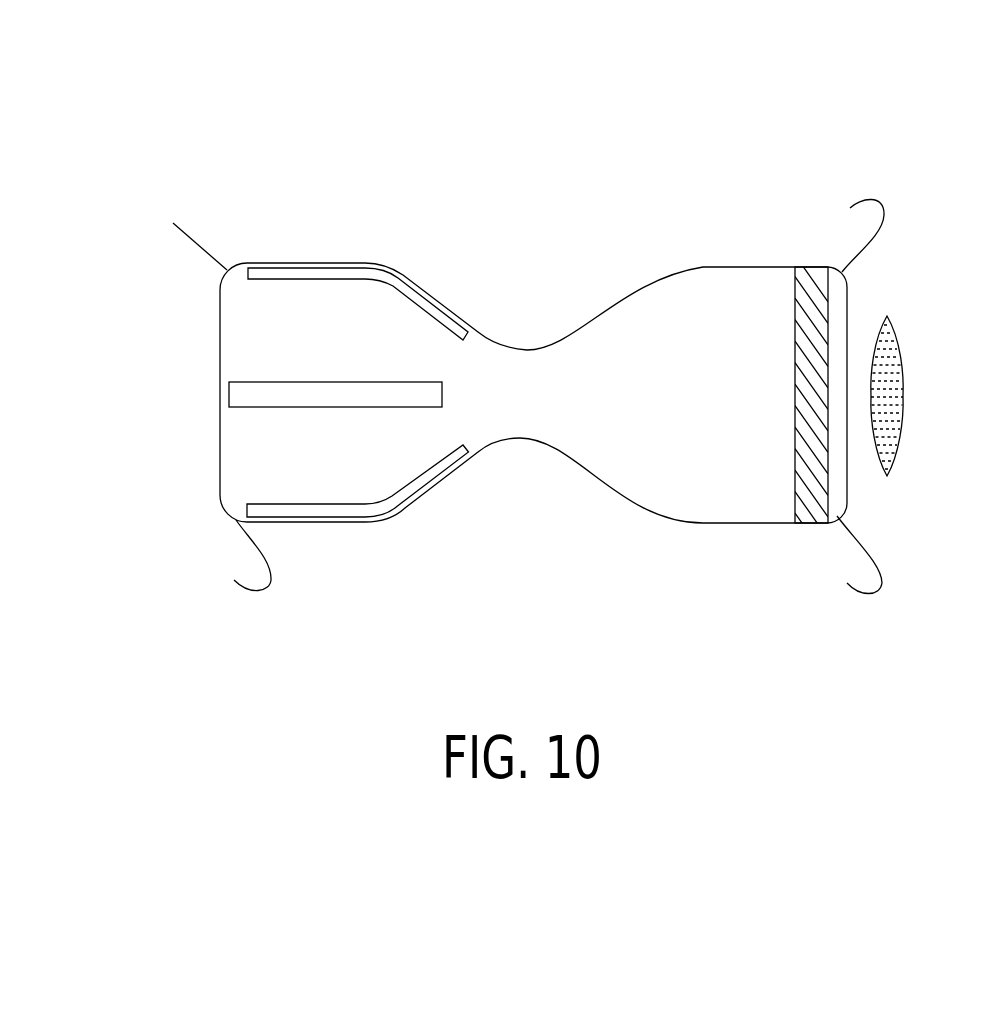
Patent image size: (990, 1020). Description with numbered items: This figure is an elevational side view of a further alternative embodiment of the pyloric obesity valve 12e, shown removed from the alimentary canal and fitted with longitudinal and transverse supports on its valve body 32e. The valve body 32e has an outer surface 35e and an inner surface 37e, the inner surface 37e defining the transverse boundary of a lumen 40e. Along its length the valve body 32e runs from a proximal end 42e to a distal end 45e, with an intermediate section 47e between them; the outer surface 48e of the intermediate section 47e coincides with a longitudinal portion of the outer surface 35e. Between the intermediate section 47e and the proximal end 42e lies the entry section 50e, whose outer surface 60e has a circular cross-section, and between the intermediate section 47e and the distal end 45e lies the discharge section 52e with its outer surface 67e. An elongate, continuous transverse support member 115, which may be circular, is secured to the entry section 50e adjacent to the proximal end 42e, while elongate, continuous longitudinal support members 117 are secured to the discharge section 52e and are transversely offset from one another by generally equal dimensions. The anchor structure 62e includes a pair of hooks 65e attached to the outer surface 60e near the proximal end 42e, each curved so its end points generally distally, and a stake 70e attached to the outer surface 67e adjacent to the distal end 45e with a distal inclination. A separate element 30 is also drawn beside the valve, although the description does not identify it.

The stake 70e is at (187, 230).
The anchor structure 62e is at (218, 257).
The discharge section 52e is at (332, 258).
The pyloric obesity valve 12e is at (425, 283).
The intermediate section 47e is at (530, 346).
The valve body 32e is at (633, 298).
The entry section 50e is at (715, 265).
The distal end 45e is at (218, 300).
The outer surface of discharge section 67e is at (363, 327).
The longitudinal support members 117 is at (298, 393).
The outer surface of intermediate section 48e is at (496, 445).
The hooks 65e is at (272, 582).
The outer surface 35e is at (748, 467).
The outer surface of entry section 60e is at (773, 321).
The transverse support member 115 is at (795, 382).
The inner surface 37e is at (848, 312).
The magnet 30 is at (900, 381).
The proximal end 42e is at (847, 400).
The lumen 40e is at (847, 464).